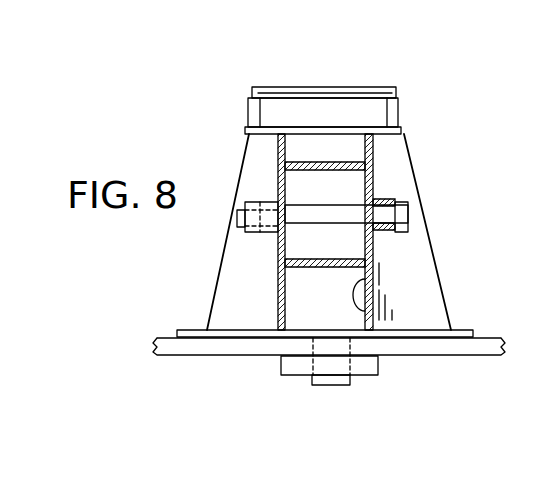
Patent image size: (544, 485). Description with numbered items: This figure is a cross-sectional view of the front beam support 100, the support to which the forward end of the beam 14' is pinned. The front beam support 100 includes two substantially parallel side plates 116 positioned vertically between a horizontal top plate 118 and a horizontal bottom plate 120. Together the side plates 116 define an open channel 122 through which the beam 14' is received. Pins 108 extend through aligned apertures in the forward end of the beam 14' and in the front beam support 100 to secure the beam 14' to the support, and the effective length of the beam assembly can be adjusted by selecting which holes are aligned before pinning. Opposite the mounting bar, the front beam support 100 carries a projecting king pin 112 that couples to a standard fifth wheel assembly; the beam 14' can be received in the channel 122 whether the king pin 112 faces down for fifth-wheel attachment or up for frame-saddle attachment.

The front beam support 100 is at (290, 68).
The top plate 118 is at (402, 130).
The side plates 116 is at (276, 158).
The pins 108 is at (408, 201).
The beam 14' is at (396, 240).
The open channel 122 is at (358, 281).
The bottom plate 120 is at (473, 330).
The king pin 112 is at (328, 385).